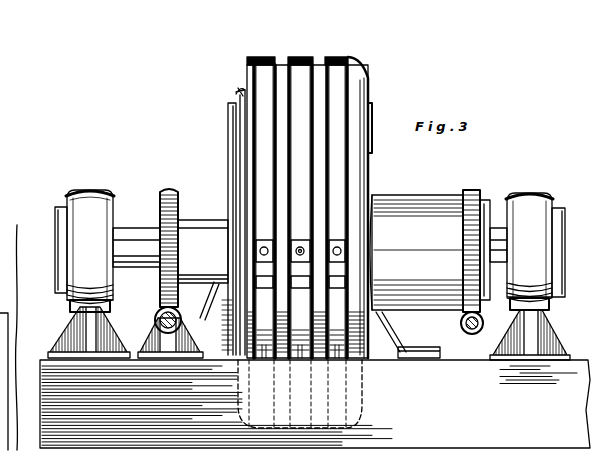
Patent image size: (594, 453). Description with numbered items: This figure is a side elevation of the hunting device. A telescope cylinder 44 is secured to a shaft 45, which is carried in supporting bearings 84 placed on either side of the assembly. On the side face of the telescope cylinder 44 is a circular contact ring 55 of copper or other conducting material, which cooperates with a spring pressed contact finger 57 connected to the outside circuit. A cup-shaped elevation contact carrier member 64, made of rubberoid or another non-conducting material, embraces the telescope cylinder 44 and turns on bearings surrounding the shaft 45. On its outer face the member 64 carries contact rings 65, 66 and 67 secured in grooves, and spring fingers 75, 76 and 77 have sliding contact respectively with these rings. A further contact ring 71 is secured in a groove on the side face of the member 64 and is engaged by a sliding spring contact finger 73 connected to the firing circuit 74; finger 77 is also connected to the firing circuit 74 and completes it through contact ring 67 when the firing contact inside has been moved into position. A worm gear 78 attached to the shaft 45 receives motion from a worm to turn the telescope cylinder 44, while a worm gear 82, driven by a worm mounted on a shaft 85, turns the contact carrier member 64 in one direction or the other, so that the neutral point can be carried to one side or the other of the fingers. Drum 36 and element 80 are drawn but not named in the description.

The drum 36 is at (318, 207).
The telescope cylinder 44 is at (236, 93).
The shaft 45 is at (136, 232).
The circular contact ring 55 is at (216, 250).
The spring pressed contact finger 57 is at (196, 318).
The elevation contact carrier member 64 is at (250, 146).
The contact ring 65 is at (265, 211).
The contact ring 66 is at (300, 211).
The contact ring 67 is at (336, 211).
The contact ring 71 is at (381, 243).
The spring contact finger 73 is at (395, 323).
The firing circuit 74 is at (462, 352).
The spring finger 75 is at (240, 362).
The spring finger 76 is at (304, 335).
The spring finger 77 is at (338, 335).
The worm gear 78 is at (176, 188).
The bolt 80 is at (160, 310).
The worm gear 82 is at (472, 192).
The supporting bearing 84 is at (86, 196).
The shaft 85 is at (484, 324).